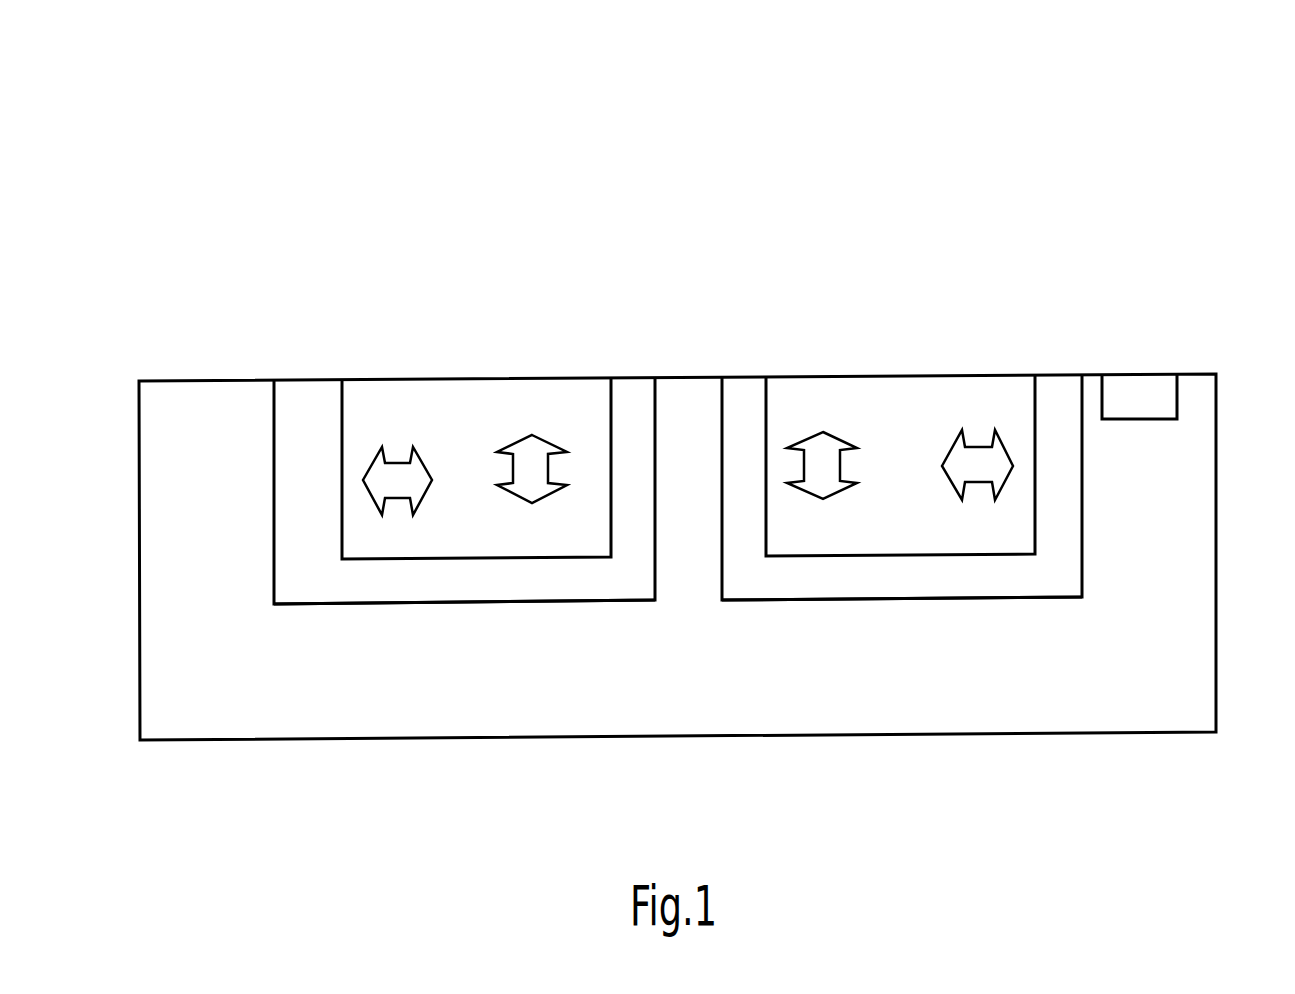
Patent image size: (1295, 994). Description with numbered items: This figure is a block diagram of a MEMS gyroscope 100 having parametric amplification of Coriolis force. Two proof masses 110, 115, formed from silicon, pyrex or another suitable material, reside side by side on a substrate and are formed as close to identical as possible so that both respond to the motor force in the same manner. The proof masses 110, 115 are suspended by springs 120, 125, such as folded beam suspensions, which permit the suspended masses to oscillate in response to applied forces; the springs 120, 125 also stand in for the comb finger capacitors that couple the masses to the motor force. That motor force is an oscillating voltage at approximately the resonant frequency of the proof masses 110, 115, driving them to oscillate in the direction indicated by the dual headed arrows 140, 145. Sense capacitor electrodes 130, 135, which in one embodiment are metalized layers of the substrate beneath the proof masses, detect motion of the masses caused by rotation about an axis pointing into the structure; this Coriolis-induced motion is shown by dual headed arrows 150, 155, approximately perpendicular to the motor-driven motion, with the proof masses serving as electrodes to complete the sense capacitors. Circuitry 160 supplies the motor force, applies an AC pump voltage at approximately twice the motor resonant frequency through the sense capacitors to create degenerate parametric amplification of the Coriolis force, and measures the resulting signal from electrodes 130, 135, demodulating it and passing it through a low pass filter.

The MEMS gyroscope 100 is at (1105, 92).
The proof mass 110 is at (473, 390).
The proof mass 115 is at (908, 385).
The spring 120 is at (319, 392).
The spring 125 is at (1060, 387).
The sense capacitor electrode 130 is at (455, 603).
The sense capacitor electrode 135 is at (899, 598).
The dual headed arrow 140 is at (405, 472).
The dual headed arrow 145 is at (976, 457).
The dual headed arrow 150 is at (533, 452).
The dual headed arrow 155 is at (826, 452).
The circuitry 160 is at (1135, 410).